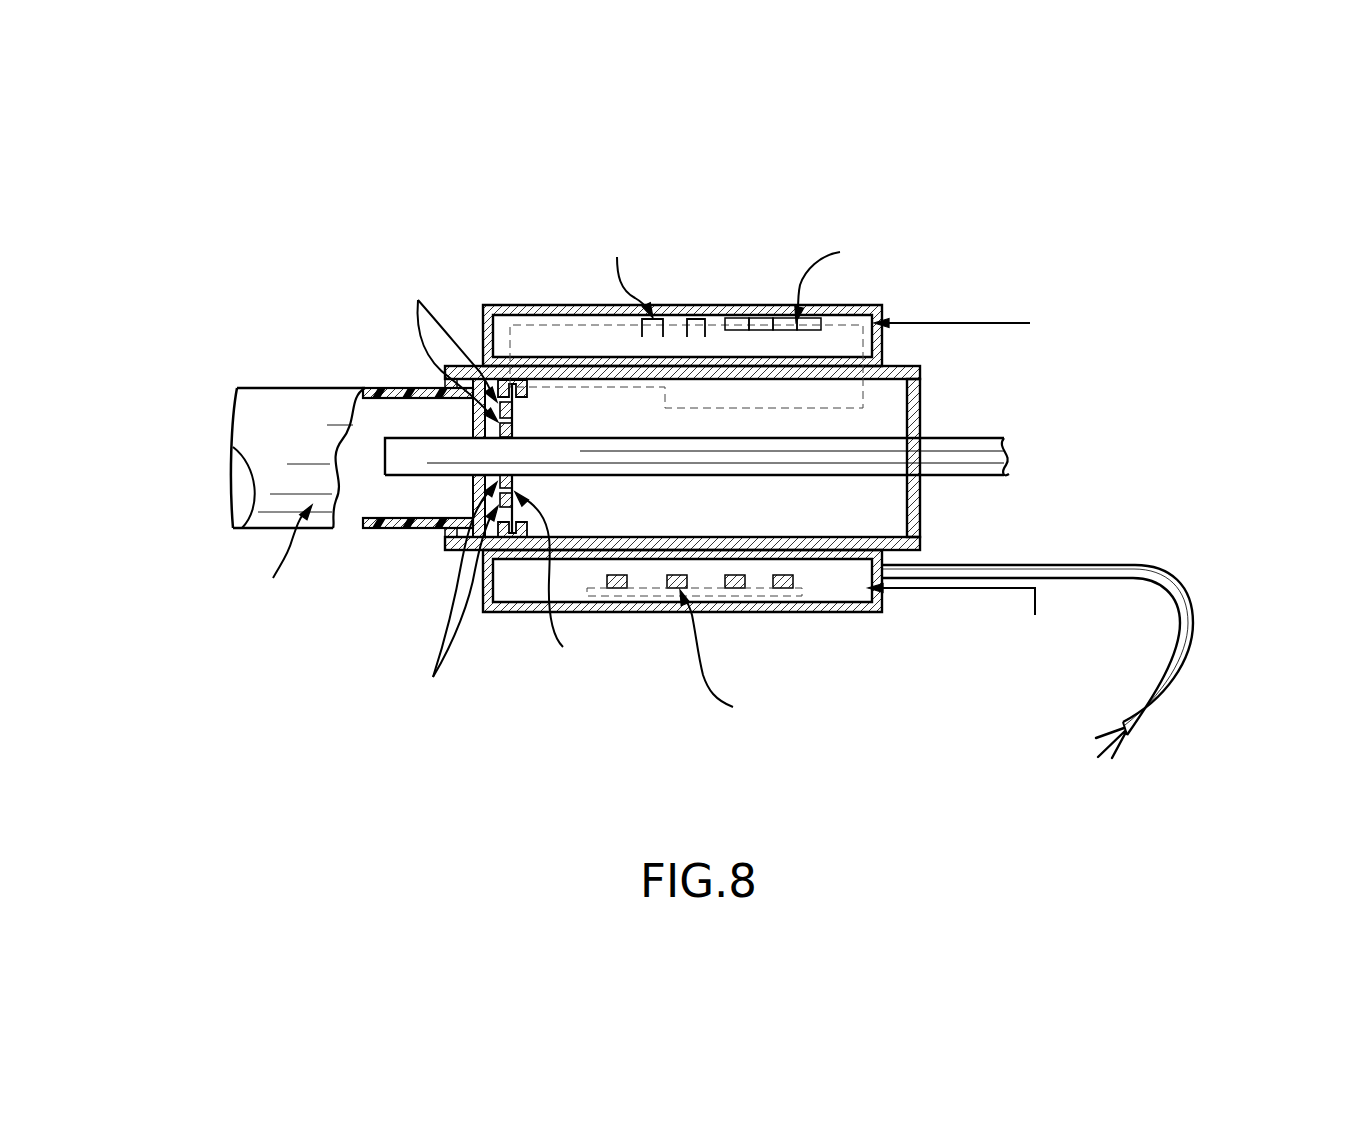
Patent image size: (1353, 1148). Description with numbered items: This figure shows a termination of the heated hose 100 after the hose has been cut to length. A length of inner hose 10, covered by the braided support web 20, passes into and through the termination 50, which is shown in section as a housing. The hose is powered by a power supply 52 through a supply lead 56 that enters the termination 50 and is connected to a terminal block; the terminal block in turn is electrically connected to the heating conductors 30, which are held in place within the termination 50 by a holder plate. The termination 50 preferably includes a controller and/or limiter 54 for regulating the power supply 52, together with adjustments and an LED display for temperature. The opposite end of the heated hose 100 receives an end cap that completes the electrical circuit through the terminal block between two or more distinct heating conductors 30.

The heated hose 100 is at (204, 218).
The heating conductors 30 is at (230, 374).
The braided support web 20 is at (374, 545).
The termination 50 is at (950, 386).
The inner hose 10 is at (1025, 457).
The controller and/or limiter 54 is at (676, 334).
The power supply 52 is at (1102, 699).
The supply lead 56 is at (1122, 748).